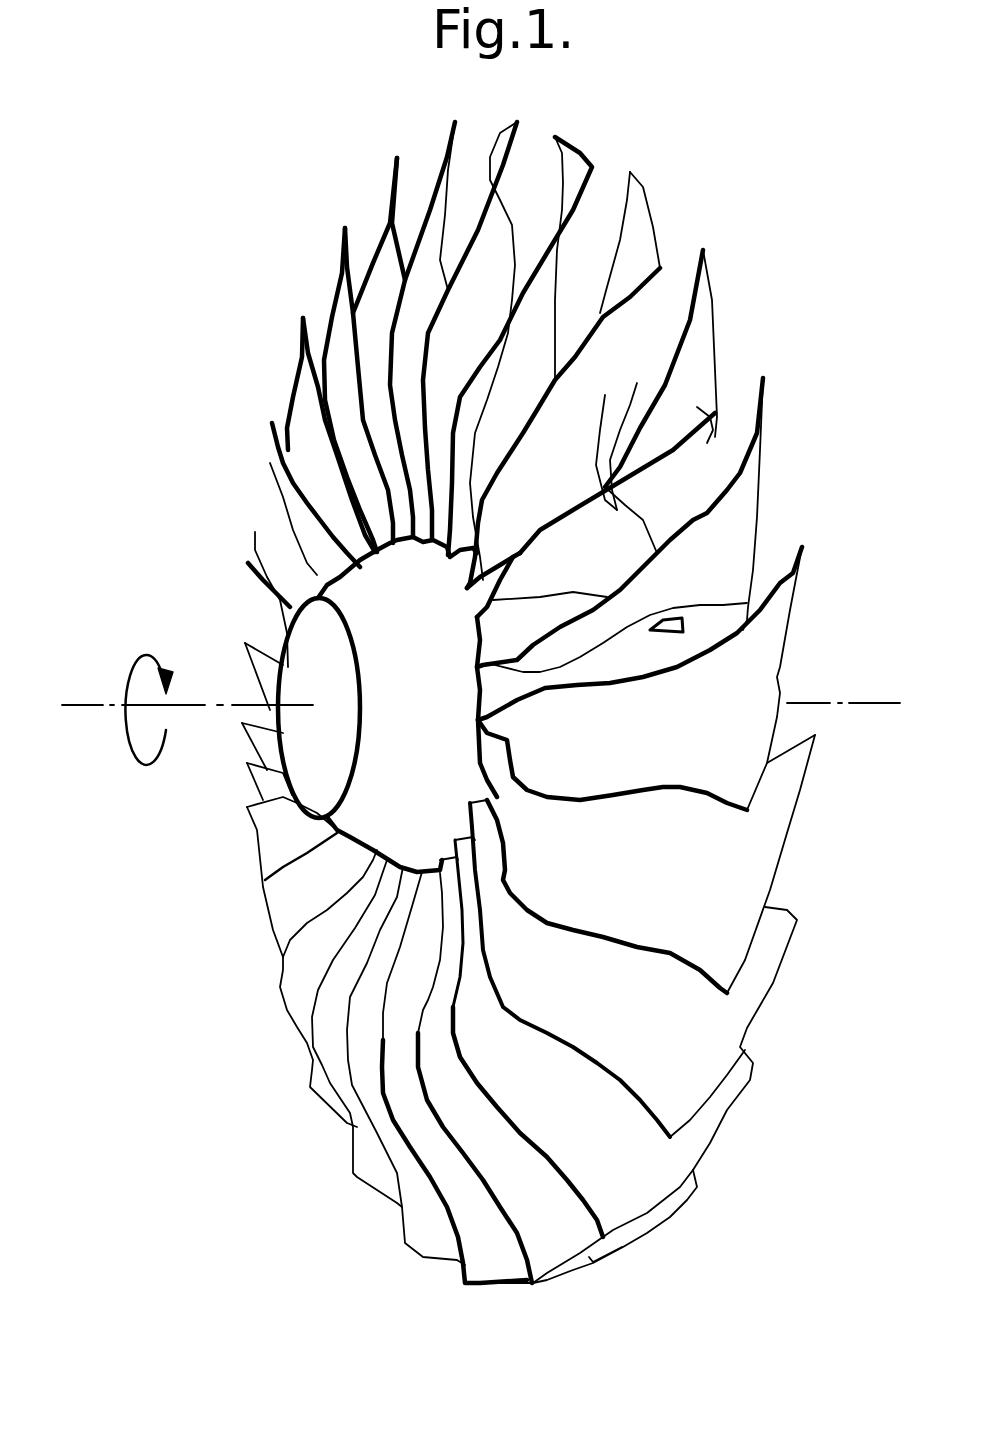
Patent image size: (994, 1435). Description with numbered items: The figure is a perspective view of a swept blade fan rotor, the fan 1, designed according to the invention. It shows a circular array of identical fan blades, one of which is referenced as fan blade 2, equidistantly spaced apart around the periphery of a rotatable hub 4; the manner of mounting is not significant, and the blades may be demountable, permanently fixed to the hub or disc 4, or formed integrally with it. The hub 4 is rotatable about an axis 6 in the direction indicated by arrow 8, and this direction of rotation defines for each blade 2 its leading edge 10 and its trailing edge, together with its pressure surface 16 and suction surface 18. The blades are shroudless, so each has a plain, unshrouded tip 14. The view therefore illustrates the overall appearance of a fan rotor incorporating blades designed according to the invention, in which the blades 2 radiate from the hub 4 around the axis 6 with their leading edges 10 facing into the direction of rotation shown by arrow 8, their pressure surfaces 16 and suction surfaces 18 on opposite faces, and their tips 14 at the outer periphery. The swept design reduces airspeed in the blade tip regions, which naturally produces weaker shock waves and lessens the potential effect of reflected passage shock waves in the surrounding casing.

The fan 1 is at (234, 952).
The fan blade 2 is at (786, 672).
The hub 4 is at (429, 717).
The axis 6 is at (197, 708).
The arrow 8 is at (133, 737).
The leading edge 10 is at (650, 790).
The tip 14 is at (797, 627).
The pressure surface 16 is at (577, 420).
The suction surface 18 is at (740, 497).